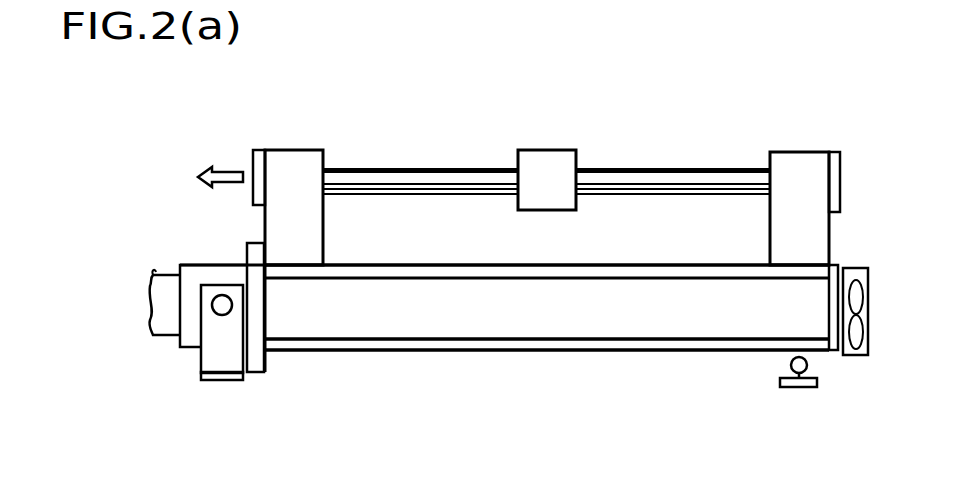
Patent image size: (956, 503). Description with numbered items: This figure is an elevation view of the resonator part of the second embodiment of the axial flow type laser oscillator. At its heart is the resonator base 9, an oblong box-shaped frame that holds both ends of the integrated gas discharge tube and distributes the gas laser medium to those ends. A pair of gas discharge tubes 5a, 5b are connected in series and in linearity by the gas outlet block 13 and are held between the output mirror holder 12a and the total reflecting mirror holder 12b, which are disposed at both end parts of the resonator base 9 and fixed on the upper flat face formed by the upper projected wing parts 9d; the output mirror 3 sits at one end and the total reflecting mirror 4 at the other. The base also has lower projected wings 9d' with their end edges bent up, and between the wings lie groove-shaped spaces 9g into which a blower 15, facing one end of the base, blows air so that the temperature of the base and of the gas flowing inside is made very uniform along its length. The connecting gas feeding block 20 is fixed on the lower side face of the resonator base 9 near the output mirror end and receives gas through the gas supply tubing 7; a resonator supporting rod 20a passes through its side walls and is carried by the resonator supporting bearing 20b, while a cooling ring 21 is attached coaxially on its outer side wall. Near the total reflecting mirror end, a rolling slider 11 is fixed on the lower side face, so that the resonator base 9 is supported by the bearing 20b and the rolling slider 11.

The output mirror 3 is at (253, 152).
The total reflecting mirror 4 is at (838, 212).
The gas discharge tube 5a is at (425, 168).
The gas discharge tube 5b is at (679, 168).
The gas supply tubing 7 is at (172, 327).
The resonator base 9 is at (532, 330).
The upper projected wing part 9d is at (547, 253).
The lower projected wing 9d' is at (547, 379).
The groove-shaped space 9g is at (437, 312).
The rolling slider 11 is at (799, 388).
The output mirror holder 12a is at (293, 150).
The total reflecting mirror holder 12b is at (801, 152).
The gas outlet block 13 is at (549, 150).
The blower 15 is at (846, 357).
The connecting gas feeding block 20 is at (183, 350).
The resonator supporting rod 20a is at (222, 300).
The resonator supporting bearing 20b is at (228, 380).
The cooling ring 21 is at (264, 371).